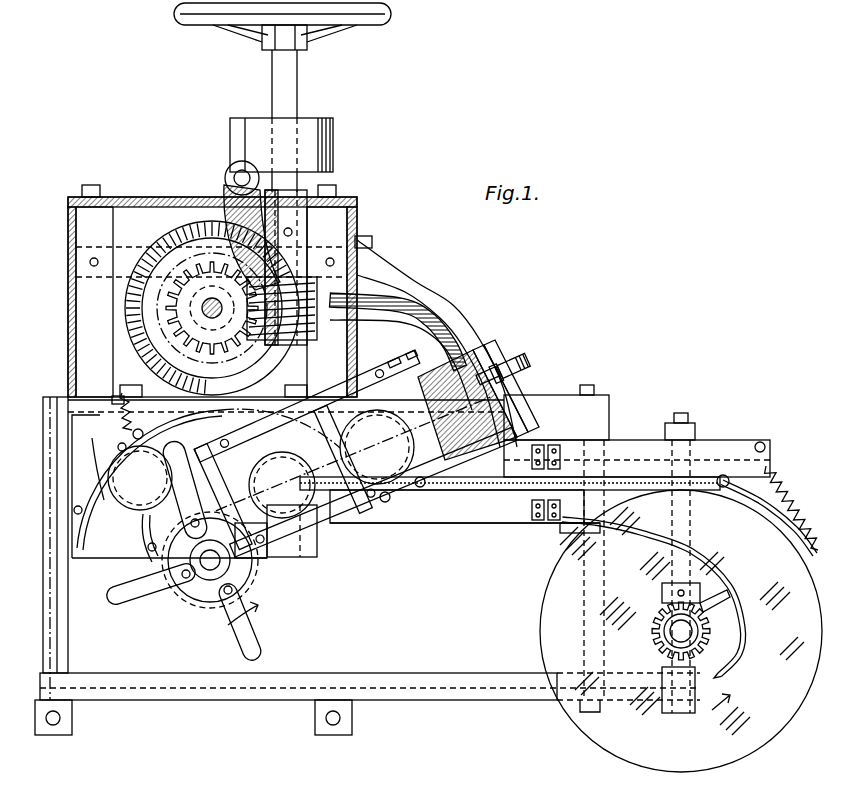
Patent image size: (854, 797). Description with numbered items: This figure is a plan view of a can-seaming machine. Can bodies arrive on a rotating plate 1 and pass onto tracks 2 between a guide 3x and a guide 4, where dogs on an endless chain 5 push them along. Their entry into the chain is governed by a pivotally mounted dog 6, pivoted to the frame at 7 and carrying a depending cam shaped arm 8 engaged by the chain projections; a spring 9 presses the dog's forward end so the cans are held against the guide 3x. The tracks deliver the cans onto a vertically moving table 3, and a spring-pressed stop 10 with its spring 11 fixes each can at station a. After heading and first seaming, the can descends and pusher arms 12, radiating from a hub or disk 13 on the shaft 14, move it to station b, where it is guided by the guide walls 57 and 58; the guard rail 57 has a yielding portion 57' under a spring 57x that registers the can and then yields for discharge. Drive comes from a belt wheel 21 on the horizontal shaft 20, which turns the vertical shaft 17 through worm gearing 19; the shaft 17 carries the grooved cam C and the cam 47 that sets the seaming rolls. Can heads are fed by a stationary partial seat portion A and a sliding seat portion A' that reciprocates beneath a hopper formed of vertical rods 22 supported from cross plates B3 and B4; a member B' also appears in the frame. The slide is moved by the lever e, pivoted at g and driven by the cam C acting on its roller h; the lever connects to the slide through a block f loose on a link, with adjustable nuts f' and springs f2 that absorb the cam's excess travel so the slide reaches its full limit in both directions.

The rotating plate 1 is at (681, 631).
The tracks 2 is at (457, 506).
The vertically moving table 3 is at (80, 470).
The guide 3x is at (530, 526).
The guide 4 is at (590, 447).
The endless chain 5 is at (472, 492).
The pivotally mounted dog 6 is at (737, 505).
The pivot 7 is at (770, 510).
The cam shaped arm 8 is at (727, 477).
The spring 9 is at (795, 506).
The stop 10 is at (185, 490).
The spring 11 is at (270, 560).
The pusher arms 12 is at (124, 598).
The hub or disk 13 is at (205, 600).
The shaft 14 is at (230, 571).
The vertical shaft 17 is at (211, 304).
The worm gearing 19 is at (198, 300).
The horizontal shaft 20 is at (288, 100).
The belt wheel 21 is at (333, 150).
The vertical rods 22 is at (420, 488).
The cam 47 is at (140, 316).
The guide wall 57 is at (110, 394).
The spring 57x is at (114, 400).
The yielding portion 57' is at (92, 464).
The guide wall 58 is at (155, 530).
The grooved cam C is at (128, 308).
The pivot g is at (240, 178).
The roller h is at (364, 247).
The lever e is at (430, 292).
The station a is at (282, 485).
The partial seat portion A is at (282, 486).
The seat portion A' is at (392, 364).
The member B' is at (322, 534).
The cross plate B3 is at (377, 447).
The cross plate B4 is at (430, 378).
The station b is at (140, 478).
The block f is at (511, 379).
The adjustable nuts f' is at (511, 353).
The springs f2 is at (520, 378).